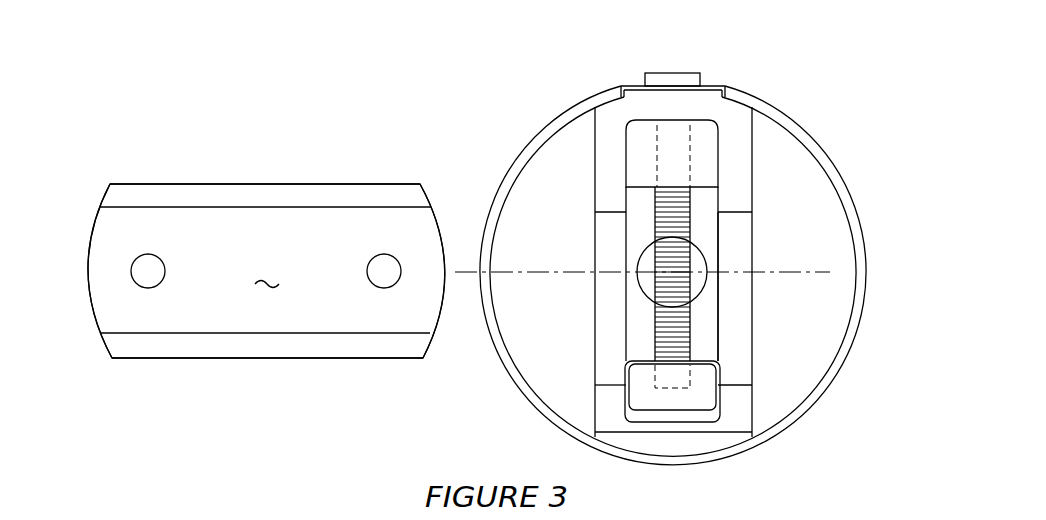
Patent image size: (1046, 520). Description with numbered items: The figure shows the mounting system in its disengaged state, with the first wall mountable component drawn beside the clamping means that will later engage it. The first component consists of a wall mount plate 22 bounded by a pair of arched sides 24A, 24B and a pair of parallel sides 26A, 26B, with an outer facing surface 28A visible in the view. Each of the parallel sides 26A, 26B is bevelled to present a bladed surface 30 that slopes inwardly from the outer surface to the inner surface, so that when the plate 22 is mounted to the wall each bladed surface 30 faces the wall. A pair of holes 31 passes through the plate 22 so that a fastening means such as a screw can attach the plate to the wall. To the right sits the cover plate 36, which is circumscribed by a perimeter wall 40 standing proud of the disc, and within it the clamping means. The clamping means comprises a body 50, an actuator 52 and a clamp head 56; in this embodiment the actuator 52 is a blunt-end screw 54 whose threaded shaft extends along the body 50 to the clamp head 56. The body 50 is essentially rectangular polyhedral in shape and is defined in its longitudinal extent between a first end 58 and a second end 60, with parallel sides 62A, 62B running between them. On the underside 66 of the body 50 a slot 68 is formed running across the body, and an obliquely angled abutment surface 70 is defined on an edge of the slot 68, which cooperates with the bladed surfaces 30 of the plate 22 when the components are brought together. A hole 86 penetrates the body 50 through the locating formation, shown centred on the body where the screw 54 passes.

The wall mount plate 22 is at (280, 318).
The arched side 24A is at (90, 262).
The arched side 24B is at (441, 222).
The parallel side 26A is at (276, 182).
The parallel side 26B is at (150, 360).
The outer facing surface 28A is at (269, 269).
The bladed surface 30 is at (216, 192).
The hole 31 is at (137, 276).
The cover plate 36 is at (688, 269).
The perimeter wall 40 is at (826, 170).
The body 50 is at (703, 138).
The actuator 52 is at (710, 228).
The blunt-end screw 54 is at (752, 325).
The clamp head 56 is at (685, 392).
The first end 58 is at (665, 450).
The second end 60 is at (638, 97).
The parallel side 62A is at (590, 370).
The parallel side 62B is at (760, 380).
The underside 66 is at (600, 155).
The slot 68 is at (757, 237).
The abutment surface 70 is at (642, 196).
The hole 86 is at (650, 290).